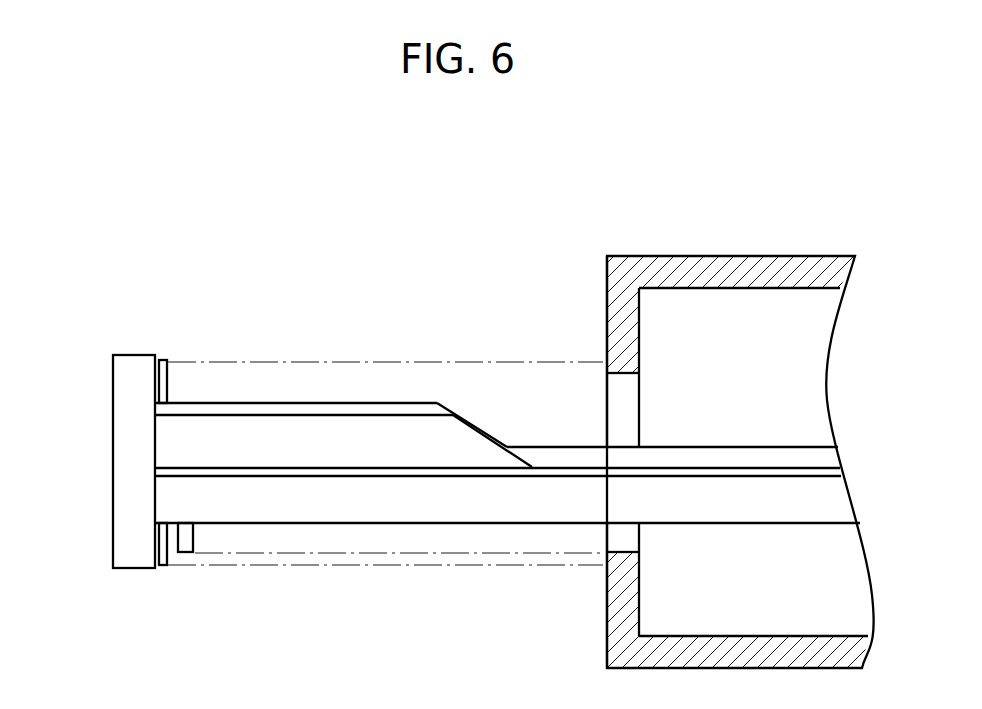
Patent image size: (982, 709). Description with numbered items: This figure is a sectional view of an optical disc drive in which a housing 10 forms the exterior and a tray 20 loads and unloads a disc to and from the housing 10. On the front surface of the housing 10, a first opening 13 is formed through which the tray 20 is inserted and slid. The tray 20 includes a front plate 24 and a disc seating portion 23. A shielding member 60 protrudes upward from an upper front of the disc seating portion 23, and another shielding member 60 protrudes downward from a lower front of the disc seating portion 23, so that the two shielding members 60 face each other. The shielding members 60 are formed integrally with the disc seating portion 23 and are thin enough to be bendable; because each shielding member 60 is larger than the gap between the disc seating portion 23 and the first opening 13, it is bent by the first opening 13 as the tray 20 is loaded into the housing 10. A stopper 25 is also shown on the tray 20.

The housing 10 is at (773, 247).
The first opening 13 is at (624, 375).
The tray 20 is at (307, 388).
The disc seating portion 23 is at (362, 495).
The front plate 24 is at (118, 465).
The stopper 25 is at (188, 552).
The shielding member 60 is at (164, 360).